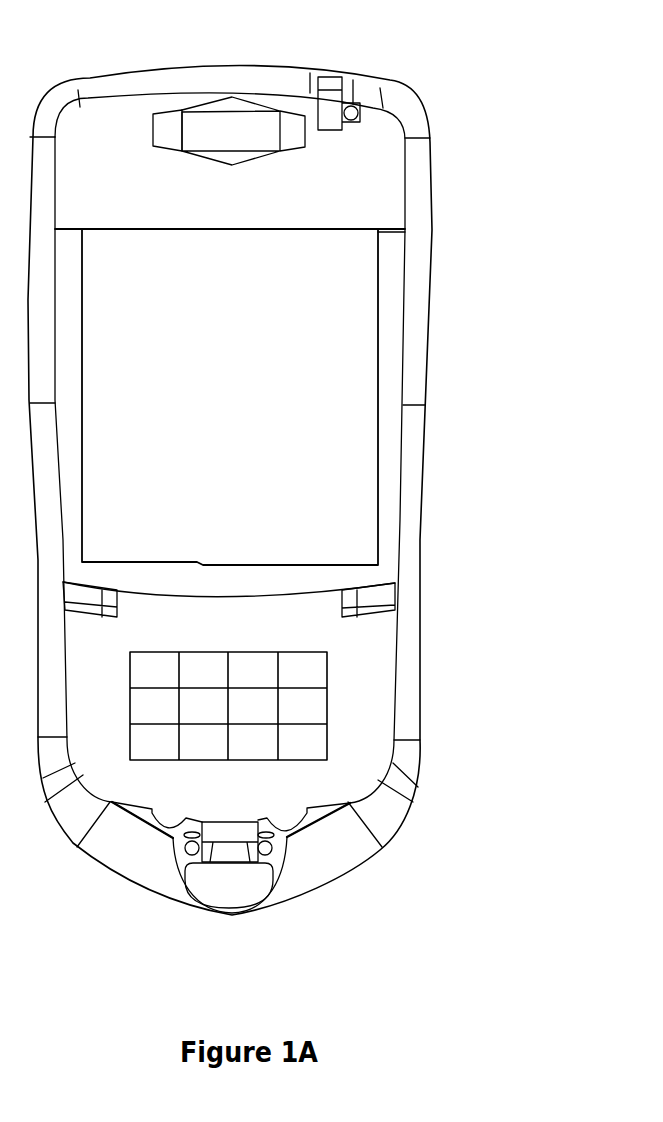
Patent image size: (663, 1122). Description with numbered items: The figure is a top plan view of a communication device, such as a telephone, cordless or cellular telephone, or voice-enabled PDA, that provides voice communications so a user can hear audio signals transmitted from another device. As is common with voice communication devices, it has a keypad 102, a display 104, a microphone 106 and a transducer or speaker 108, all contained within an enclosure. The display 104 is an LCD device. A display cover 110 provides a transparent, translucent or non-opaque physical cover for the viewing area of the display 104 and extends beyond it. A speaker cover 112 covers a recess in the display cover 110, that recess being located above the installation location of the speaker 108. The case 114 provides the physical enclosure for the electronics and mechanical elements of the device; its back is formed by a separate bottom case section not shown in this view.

The keypad 102 is at (328, 700).
The display 104 is at (352, 350).
The microphone 106 is at (237, 888).
The speaker 108 is at (238, 110).
The display cover 110 is at (382, 190).
The speaker cover 112 is at (170, 127).
The case 114 is at (433, 490).